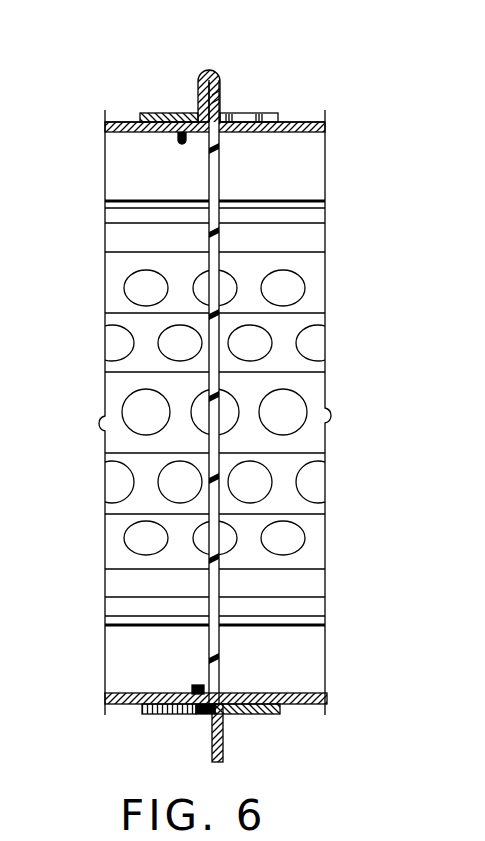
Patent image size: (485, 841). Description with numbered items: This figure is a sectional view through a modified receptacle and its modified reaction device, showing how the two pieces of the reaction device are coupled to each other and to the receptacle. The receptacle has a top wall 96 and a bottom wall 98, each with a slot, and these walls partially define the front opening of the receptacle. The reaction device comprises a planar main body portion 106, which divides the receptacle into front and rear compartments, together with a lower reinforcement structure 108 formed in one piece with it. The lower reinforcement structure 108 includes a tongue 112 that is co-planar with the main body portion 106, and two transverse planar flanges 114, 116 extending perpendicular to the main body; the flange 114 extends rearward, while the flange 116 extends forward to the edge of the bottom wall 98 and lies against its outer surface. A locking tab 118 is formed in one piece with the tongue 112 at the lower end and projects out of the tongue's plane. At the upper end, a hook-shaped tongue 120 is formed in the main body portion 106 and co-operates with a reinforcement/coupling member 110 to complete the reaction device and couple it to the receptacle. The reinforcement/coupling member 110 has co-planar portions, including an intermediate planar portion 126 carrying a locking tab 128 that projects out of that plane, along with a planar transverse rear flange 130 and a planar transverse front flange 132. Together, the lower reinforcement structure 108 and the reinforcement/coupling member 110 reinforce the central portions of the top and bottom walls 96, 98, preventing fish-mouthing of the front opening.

The top wall 96 is at (305, 121).
The bottom wall 98 is at (326, 714).
The planar main body portion 106 is at (209, 343).
The lower reinforcement structure 108 is at (218, 760).
The reinforcement/coupling member 110 is at (197, 73).
The tongue 112 is at (225, 748).
The transverse planar flange 114 is at (165, 714).
The transverse planar flange 116 is at (278, 714).
The locking tab 118 is at (205, 712).
The hook-shaped tongue 120 is at (218, 68).
The intermediate planar portion 126 is at (197, 99).
The locking tab 128 is at (181, 146).
The planar transverse rear flange 130 is at (236, 112).
The planar transverse front flange 132 is at (147, 120).